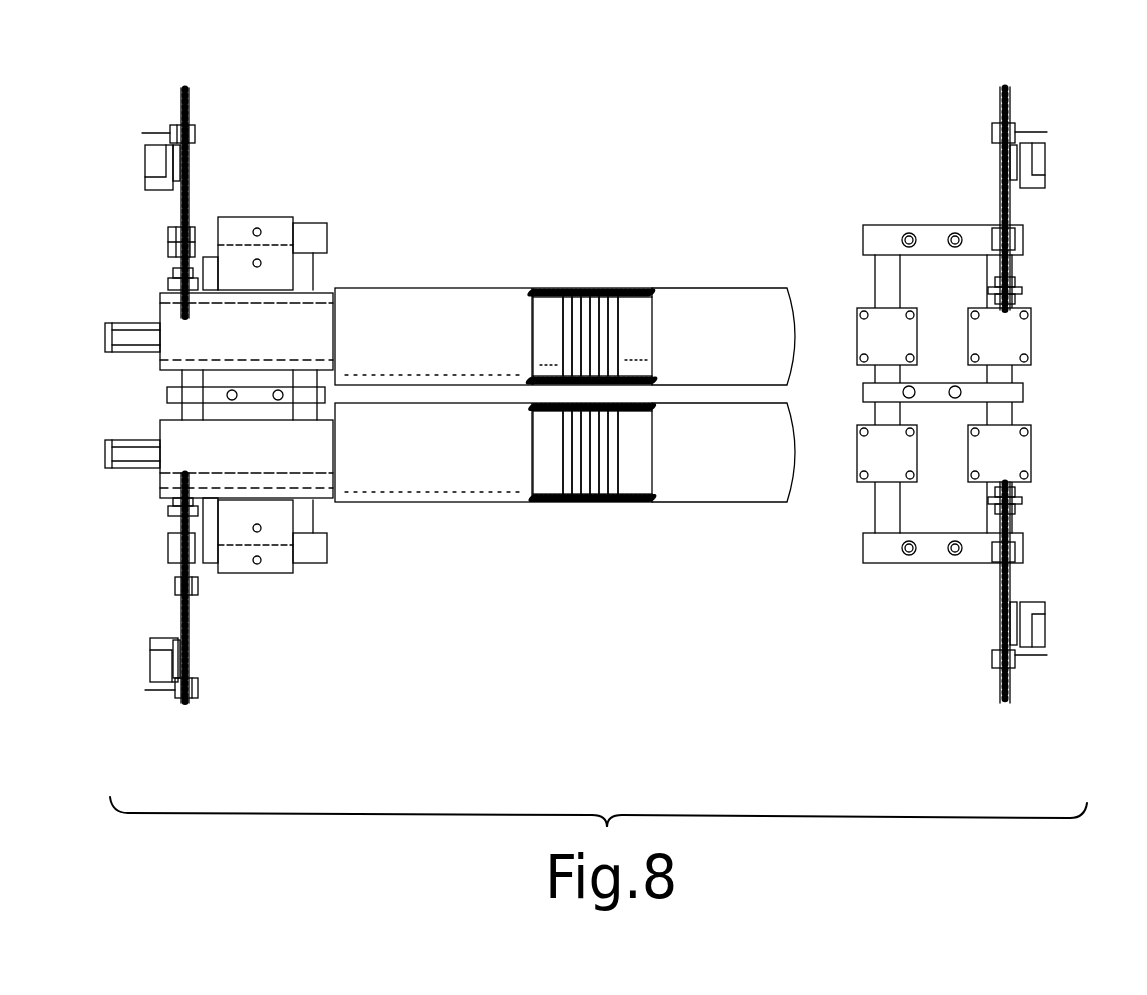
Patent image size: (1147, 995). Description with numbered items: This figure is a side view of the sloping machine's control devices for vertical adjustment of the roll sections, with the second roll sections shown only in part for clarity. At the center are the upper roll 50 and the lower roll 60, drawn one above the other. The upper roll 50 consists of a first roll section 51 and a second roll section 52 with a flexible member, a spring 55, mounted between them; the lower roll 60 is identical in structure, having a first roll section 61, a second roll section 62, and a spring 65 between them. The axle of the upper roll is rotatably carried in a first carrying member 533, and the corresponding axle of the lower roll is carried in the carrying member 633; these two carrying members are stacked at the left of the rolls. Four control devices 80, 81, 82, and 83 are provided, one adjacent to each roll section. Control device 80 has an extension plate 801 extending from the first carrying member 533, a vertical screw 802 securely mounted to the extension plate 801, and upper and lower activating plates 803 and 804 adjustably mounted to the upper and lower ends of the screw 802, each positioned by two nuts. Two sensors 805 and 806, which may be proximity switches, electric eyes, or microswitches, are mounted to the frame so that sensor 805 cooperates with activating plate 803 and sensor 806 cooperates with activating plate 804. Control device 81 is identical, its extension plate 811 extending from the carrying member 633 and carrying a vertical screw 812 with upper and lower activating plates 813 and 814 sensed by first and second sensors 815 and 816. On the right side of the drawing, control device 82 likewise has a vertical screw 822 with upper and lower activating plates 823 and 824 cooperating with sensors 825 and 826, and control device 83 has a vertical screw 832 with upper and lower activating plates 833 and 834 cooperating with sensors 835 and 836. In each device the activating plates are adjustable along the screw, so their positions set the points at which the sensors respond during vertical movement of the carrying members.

The upper roll 50 is at (565, 272).
The first roll section 51 is at (433, 313).
The second roll section 52 is at (723, 311).
The spring 55 is at (593, 304).
The lower roll 60 is at (565, 509).
The first roll section 61 is at (433, 479).
The second roll section 62 is at (723, 486).
The spring 65 is at (593, 497).
The first carrying member 533 is at (246, 292).
The carrying member 633 is at (248, 515).
The control device 80 is at (220, 187).
The extension plate 801 is at (264, 228).
The vertical screw 802 is at (221, 203).
The upper activating plate 803 is at (155, 95).
The lower activating plate 804 is at (231, 213).
The sensor 805 is at (132, 157).
The sensor 806 is at (221, 135).
The control device 81 is at (207, 621).
The extension plate 811 is at (251, 562).
The vertical screw 812 is at (225, 588).
The upper activating plate 813 is at (228, 602).
The lower activating plate 814 is at (152, 730).
The first sensor 815 is at (224, 698).
The second sensor 816 is at (130, 674).
The control device 82 is at (987, 184).
The vertical screw 822 is at (1037, 273).
The upper activating plate 823 is at (1039, 101).
The lower activating plate 824 is at (943, 205).
The first sensor 825 is at (1060, 148).
The second sensor 826 is at (965, 192).
The control device 83 is at (986, 611).
The vertical screw 832 is at (1038, 590).
The upper activating plate 833 is at (943, 575).
The lower activating plate 834 is at (1039, 701).
The first sensor 835 is at (974, 661).
The second sensor 836 is at (1059, 638).